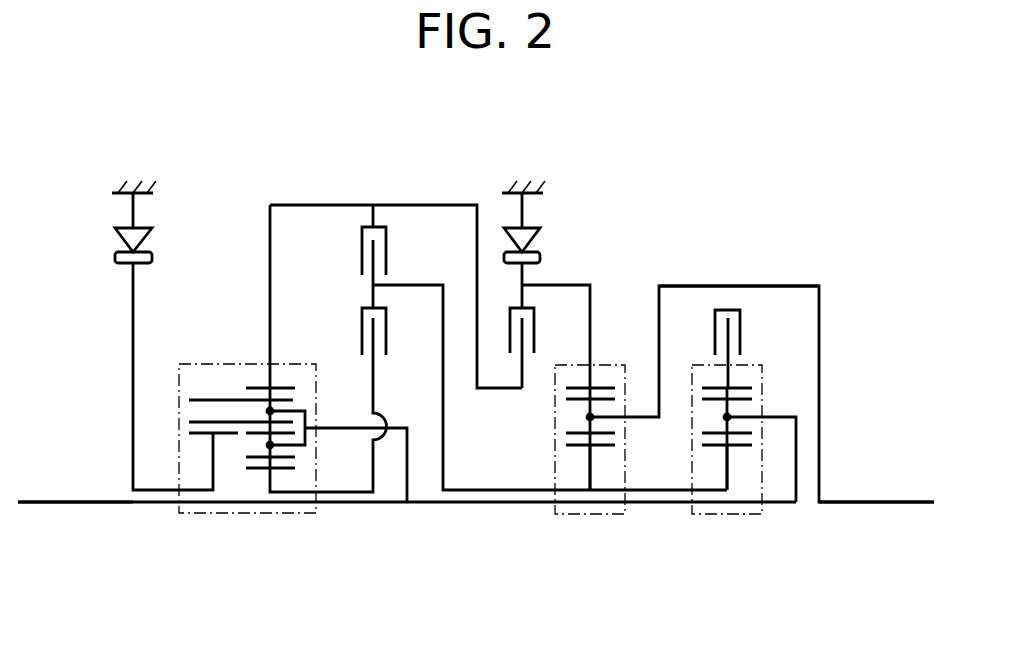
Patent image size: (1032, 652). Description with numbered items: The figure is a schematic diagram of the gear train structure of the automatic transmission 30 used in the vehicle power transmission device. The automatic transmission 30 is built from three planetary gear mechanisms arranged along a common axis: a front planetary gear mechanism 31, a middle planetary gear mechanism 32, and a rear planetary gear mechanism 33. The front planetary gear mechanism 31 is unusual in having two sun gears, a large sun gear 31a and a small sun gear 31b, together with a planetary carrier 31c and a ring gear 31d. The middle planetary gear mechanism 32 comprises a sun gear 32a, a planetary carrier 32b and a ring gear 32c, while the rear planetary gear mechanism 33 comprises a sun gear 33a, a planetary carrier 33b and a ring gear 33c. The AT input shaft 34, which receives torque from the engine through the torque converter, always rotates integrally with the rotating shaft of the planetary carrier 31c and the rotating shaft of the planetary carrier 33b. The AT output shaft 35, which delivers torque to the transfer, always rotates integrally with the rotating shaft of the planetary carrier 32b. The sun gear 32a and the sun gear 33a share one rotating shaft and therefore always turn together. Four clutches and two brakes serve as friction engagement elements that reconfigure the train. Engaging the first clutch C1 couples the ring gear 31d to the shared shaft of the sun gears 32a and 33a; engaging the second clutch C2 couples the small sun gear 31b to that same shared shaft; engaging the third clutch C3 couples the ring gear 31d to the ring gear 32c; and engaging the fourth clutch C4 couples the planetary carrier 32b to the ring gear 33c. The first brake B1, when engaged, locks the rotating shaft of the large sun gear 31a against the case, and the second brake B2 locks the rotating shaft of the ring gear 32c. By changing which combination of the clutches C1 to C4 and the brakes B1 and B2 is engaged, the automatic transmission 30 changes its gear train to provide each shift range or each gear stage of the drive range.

The automatic transmission 30 is at (775, 195).
The front planetary gear mechanism 31 is at (198, 363).
The large sun gear 31a is at (203, 437).
The small sun gear 31b is at (257, 473).
The planetary carrier 31c is at (296, 407).
The ring gear 31d is at (259, 387).
The middle planetary gear mechanism 32 is at (553, 440).
The sun gear 32a is at (580, 447).
The planetary carrier 32b is at (617, 420).
The ring gear 32c is at (605, 388).
The rear planetary gear mechanism 33 is at (692, 442).
The sun gear 33a is at (717, 447).
The planetary carrier 33b is at (757, 420).
The ring gear 33c is at (700, 388).
The AT input shaft 34 is at (52, 500).
The AT output shaft 35 is at (898, 500).
The first brake B1 is at (145, 238).
The second brake B2 is at (534, 238).
The first clutch C1 is at (387, 247).
The second clutch C2 is at (387, 327).
The third clutch C3 is at (535, 325).
The fourth clutch C4 is at (741, 325).